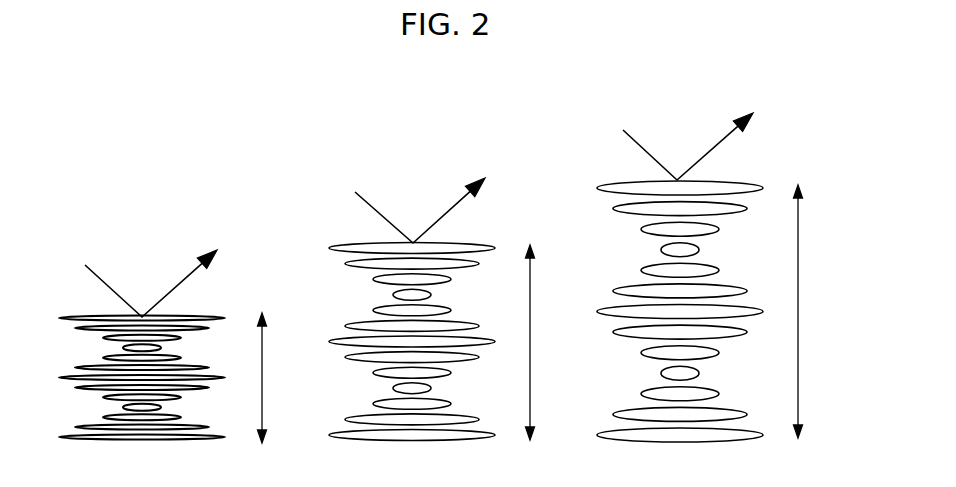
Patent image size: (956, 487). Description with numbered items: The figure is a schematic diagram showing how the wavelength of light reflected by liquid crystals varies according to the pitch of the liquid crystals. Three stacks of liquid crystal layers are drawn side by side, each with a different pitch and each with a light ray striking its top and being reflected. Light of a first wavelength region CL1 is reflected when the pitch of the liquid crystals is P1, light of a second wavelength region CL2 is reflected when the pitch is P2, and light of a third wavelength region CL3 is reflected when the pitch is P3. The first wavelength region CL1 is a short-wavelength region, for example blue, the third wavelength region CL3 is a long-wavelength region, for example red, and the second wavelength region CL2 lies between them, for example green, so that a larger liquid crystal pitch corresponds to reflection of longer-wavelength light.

The first wavelength region CL1 is at (151, 268).
The second wavelength region CL2 is at (420, 194).
The third wavelength region CL3 is at (688, 132).
The pitch of liquid crystals P1 is at (180, 378).
The pitch of liquid crystals P2 is at (448, 342).
The pitch of liquid crystals P3 is at (717, 311).